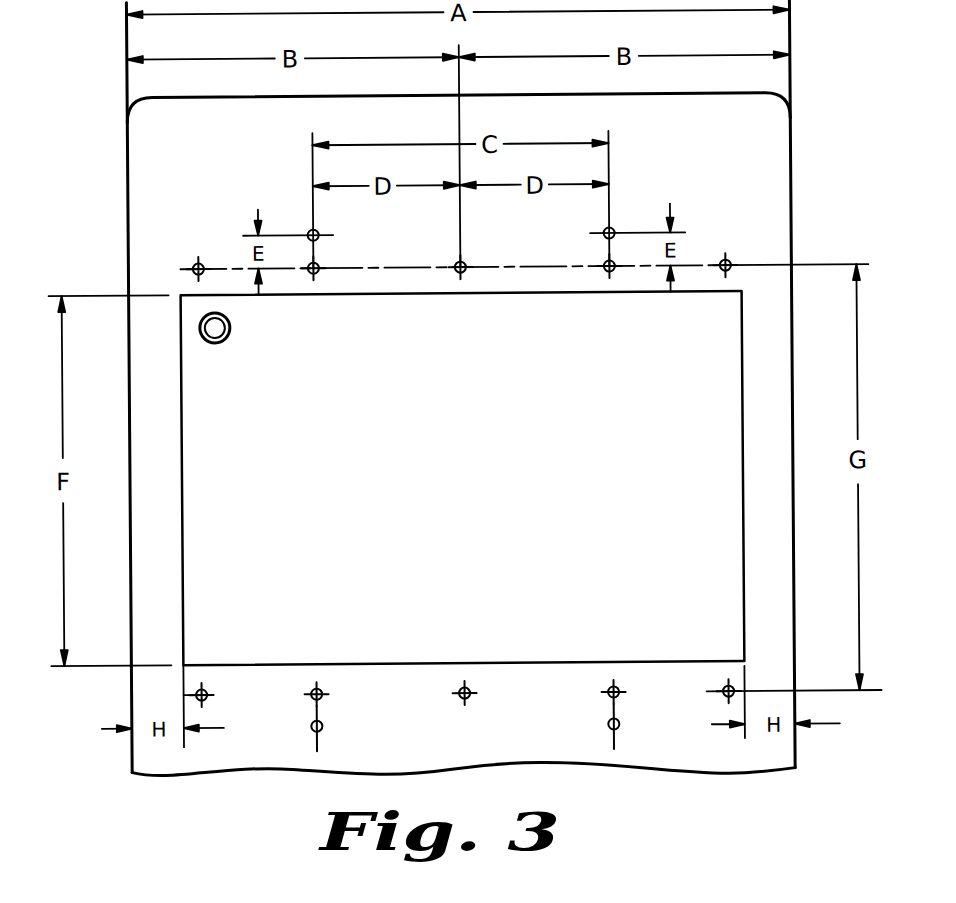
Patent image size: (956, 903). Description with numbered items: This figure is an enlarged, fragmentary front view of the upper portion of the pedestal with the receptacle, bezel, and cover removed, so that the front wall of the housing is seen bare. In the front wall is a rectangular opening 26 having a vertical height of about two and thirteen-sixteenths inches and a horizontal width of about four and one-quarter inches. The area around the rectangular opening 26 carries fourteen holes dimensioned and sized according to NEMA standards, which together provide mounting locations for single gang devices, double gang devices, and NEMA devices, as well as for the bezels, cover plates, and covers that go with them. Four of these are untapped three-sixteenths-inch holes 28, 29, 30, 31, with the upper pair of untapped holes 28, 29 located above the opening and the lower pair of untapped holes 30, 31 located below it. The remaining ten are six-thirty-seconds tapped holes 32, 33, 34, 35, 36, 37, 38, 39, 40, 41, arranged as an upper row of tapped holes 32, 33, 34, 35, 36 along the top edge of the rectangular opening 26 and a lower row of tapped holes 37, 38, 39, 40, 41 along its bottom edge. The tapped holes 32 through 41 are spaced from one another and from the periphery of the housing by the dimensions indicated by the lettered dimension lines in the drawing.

The rectangular opening 26 is at (183, 480).
The untapped hole 28 is at (311, 231).
The untapped hole 29 is at (614, 230).
The untapped hole 30 is at (322, 726).
The untapped hole 31 is at (606, 725).
The tapped hole 32 is at (196, 260).
The tapped hole 33 is at (312, 275).
The tapped hole 34 is at (461, 275).
The tapped hole 35 is at (609, 275).
The tapped hole 36 is at (724, 274).
The tapped hole 37 is at (203, 686).
The tapped hole 38 is at (315, 686).
The tapped hole 39 is at (462, 686).
The tapped hole 40 is at (611, 686).
The tapped hole 41 is at (722, 684).